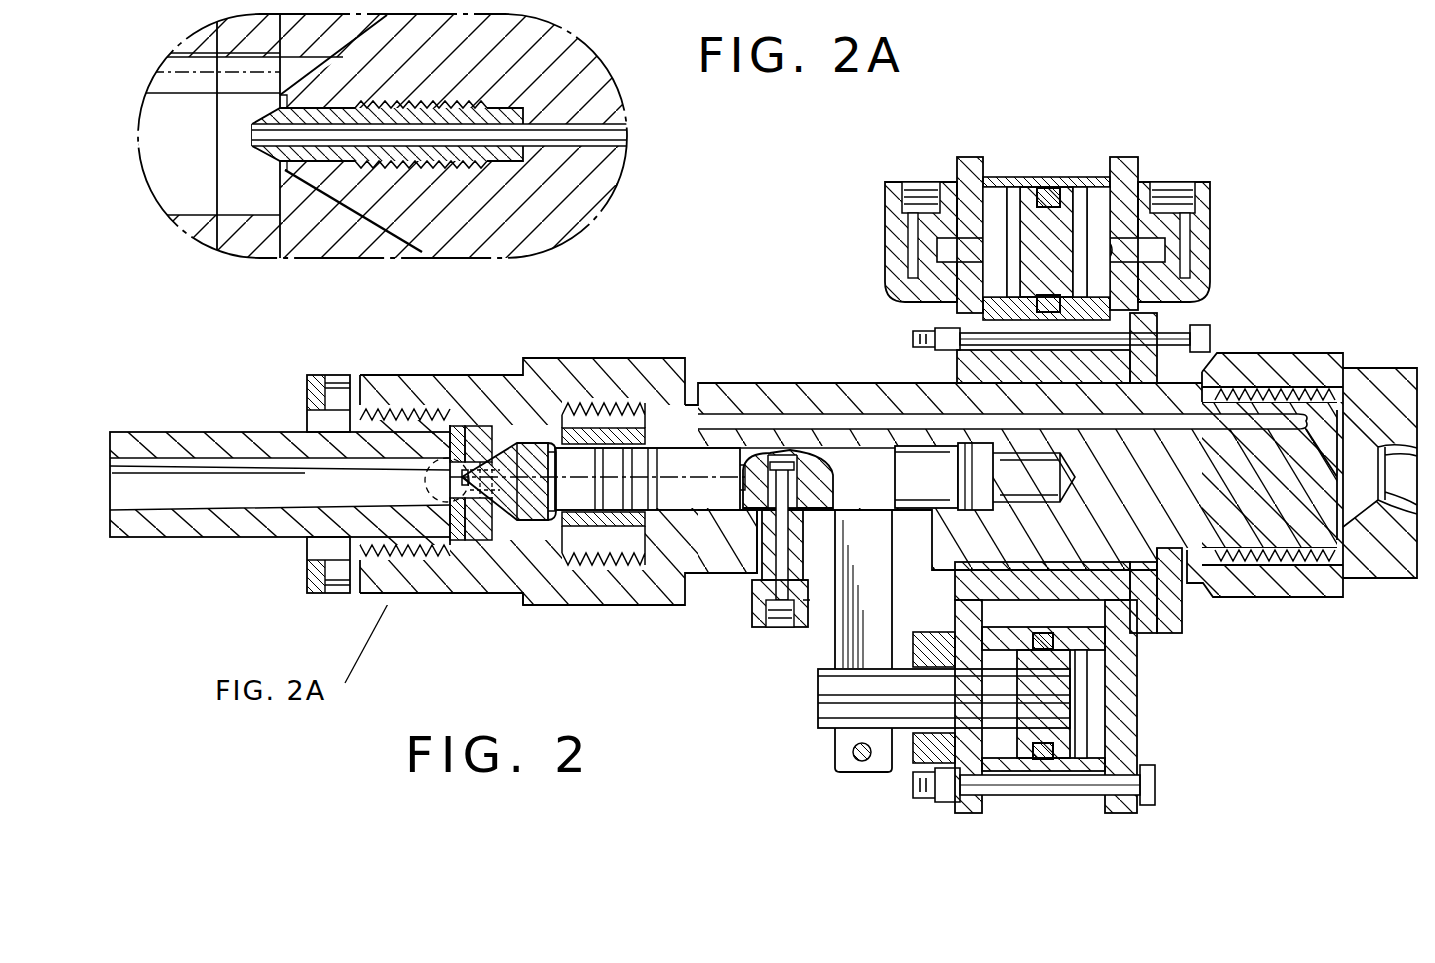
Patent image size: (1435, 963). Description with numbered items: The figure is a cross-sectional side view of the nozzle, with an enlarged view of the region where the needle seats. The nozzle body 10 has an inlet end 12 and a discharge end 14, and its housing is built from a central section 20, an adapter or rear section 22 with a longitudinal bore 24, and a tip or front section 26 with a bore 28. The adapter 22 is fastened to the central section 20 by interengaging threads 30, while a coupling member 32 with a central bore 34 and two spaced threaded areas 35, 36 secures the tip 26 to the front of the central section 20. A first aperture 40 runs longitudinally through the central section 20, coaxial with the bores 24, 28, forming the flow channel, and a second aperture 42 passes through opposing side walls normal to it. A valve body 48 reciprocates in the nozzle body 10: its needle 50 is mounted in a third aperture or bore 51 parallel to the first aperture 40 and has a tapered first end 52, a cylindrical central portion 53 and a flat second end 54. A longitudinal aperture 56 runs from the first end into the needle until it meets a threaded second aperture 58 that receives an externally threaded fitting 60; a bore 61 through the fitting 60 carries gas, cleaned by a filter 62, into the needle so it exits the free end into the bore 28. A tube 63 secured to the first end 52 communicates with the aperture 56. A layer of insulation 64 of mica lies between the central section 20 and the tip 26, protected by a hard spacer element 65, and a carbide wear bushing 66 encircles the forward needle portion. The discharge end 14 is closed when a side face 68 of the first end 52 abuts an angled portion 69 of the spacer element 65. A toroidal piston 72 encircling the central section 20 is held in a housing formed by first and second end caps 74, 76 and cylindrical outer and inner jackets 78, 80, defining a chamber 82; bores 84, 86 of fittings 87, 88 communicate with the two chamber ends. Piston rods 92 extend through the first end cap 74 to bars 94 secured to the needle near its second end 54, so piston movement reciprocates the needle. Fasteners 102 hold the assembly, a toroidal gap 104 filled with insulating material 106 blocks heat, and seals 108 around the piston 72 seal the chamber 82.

In FIG. 2, the nozzle body 10 is at (848, 463).
In FIG. 2, the inlet end 12 is at (1389, 459).
In FIG. 2, the discharge end 14 is at (427, 483).
In FIG. 2, the central section 20 is at (1052, 583).
In FIG. 2, the adapter or rear section 22 is at (1297, 512).
In FIG. 2, the longitudinal bore 24 is at (1402, 580).
In FIG. 2A, the tip or front section 26 is at (190, 242).
In FIG. 2, the tip or front section 26 is at (305, 548).
In FIG. 2A, the bore 28 is at (197, 58).
In FIG. 2, the bore 28 is at (192, 505).
In FIG. 2, the interengaging threads 30 is at (1283, 567).
In FIG. 2, the coupling member 32 is at (522, 523).
In FIG. 2, the central longitudinally extending bore 34 is at (537, 557).
In FIG. 2, the threaded area 35 is at (625, 553).
In FIG. 2, the threaded area 36 is at (447, 530).
In FIG. 2, the first aperture 40 is at (775, 423).
In FIG. 2, the second aperture 42 is at (742, 565).
In FIG. 2, the valve body 48 is at (815, 641).
In FIG. 2, the needle 50 is at (538, 443).
In FIG. 2, the third aperture or bore 51 is at (978, 504).
In FIG. 2, the tapered first end 52 is at (508, 500).
In FIG. 2, the cylindrical central portion 53 is at (695, 487).
In FIG. 2, the flat second end 54 is at (932, 477).
In FIG. 2A, the longitudinal aperture 56 is at (610, 120).
In FIG. 2, the longitudinal aperture 56 is at (690, 485).
In FIG. 2, the second aperture 58 is at (803, 493).
In FIG. 2, the externally threaded fitting 60 is at (810, 600).
In FIG. 2, the bore 61 is at (787, 537).
In FIG. 2, the filter 62 is at (752, 602).
In FIG. 2A, the tube 63 is at (343, 166).
In FIG. 2A, the layer of insulation 64 is at (252, 236).
In FIG. 2, the layer of insulation 64 is at (458, 425).
In FIG. 2A, the spacer element 65 is at (324, 240).
In FIG. 2, the spacer element 65 is at (483, 440).
In FIG. 2, the wear bushing 66 is at (603, 437).
In FIG. 2A, the side face 68 is at (372, 228).
In FIG. 2A, the angled portion 69 is at (383, 232).
In FIG. 2, the piston 72 is at (1027, 205).
In FIG. 2, the first end cap 74 is at (968, 165).
In FIG. 2, the second end cap 76 is at (1120, 163).
In FIG. 2, the cylindrical outer jacket 78 is at (1067, 176).
In FIG. 2, the cylindrical inner jacket 80 is at (1049, 233).
In FIG. 2, the chamber or cavity 82 is at (1190, 265).
In FIG. 2, the bore 84 is at (905, 246).
In FIG. 2, the bore 86 is at (1205, 240).
In FIG. 2, the fitting 87 is at (884, 212).
In FIG. 2, the fitting 88 is at (1205, 205).
In FIG. 2, the piston rods 92 is at (857, 695).
In FIG. 2, the bars 94 is at (837, 643).
In FIG. 2, the fasteners 102 is at (1147, 785).
In FIG. 2, the toroidal gap 104 is at (1088, 562).
In FIG. 2, the insulating material 106 is at (1040, 562).
In FIG. 2, the seals 108 is at (1037, 760).